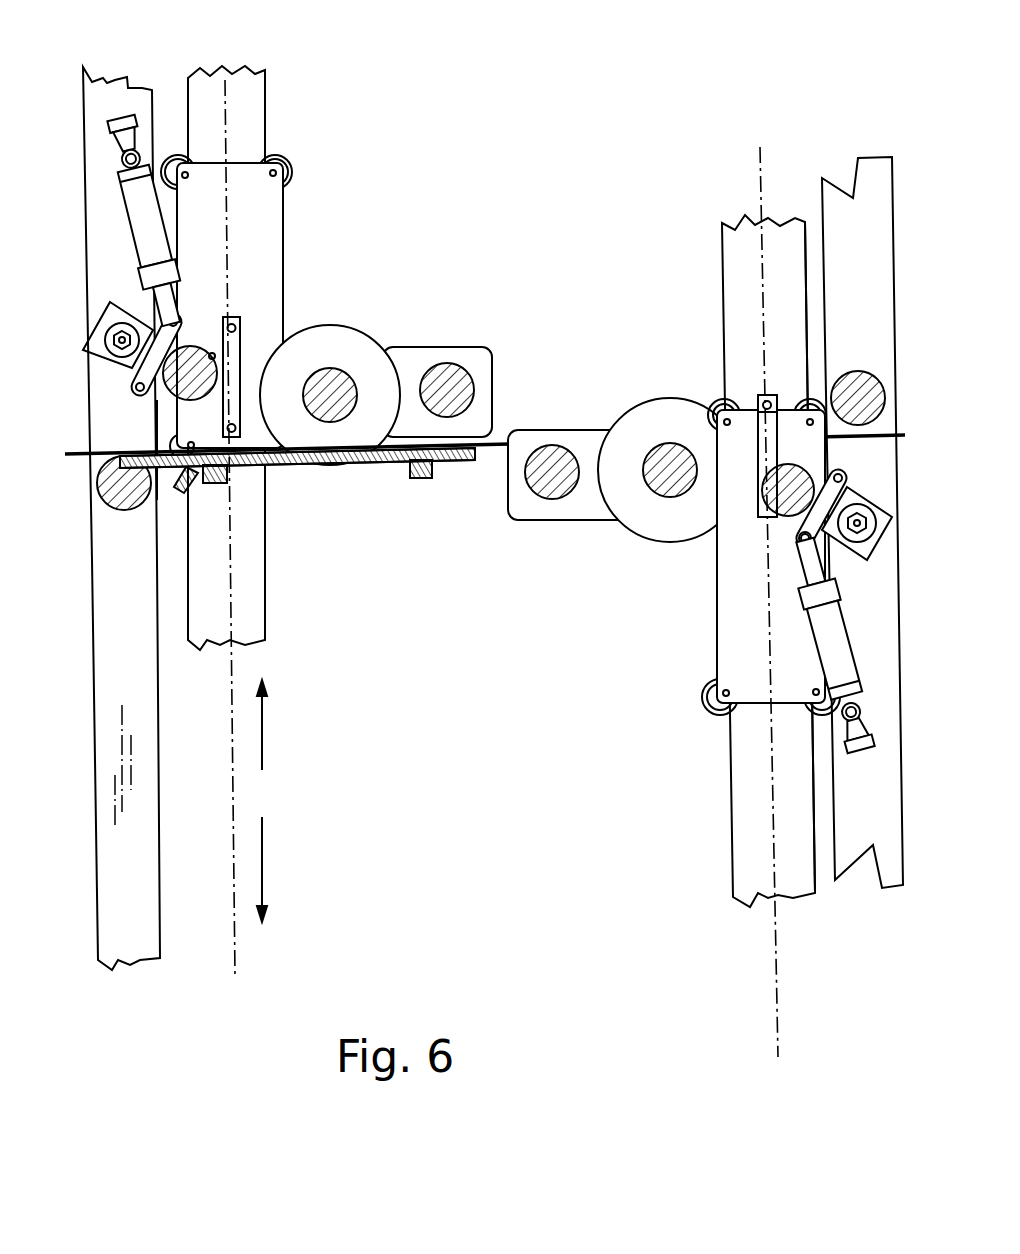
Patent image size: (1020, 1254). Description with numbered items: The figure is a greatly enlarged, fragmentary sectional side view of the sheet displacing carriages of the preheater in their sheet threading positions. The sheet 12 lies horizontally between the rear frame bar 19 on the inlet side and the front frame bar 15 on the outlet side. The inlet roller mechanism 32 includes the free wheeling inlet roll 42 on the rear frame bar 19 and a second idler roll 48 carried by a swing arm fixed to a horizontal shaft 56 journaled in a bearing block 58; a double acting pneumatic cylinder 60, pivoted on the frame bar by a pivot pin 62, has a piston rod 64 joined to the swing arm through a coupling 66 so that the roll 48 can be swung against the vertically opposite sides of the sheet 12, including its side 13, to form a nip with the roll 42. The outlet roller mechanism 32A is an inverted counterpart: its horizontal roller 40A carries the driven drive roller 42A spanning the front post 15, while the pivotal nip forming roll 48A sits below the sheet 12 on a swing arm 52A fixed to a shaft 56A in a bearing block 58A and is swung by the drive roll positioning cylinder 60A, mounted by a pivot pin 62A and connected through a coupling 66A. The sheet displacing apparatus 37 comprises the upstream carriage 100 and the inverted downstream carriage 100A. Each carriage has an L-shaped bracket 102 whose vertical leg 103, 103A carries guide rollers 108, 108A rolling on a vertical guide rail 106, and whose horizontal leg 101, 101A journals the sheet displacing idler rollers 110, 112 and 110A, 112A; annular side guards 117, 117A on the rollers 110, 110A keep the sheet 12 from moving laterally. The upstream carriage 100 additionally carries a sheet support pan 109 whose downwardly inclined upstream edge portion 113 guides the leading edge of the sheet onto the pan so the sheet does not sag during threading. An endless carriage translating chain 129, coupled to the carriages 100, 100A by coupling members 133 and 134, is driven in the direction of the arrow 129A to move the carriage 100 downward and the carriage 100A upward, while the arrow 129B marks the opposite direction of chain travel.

The sheet 12 is at (498, 463).
The side of sheet 13 is at (147, 452).
The front frame bar 15 is at (875, 200).
The rear frame bar 19 is at (92, 83).
The inlet roller mechanism 32 is at (322, 334).
The outlet roller mechanism 32A is at (721, 602).
The sheet displacing apparatus 37 is at (625, 370).
The downstream horizontal roller 40A is at (812, 262).
The sheet receiving inlet roll 42 is at (123, 493).
The drive roller 42A is at (853, 390).
The second idler roll 48 is at (241, 343).
The downstream nip forming roll 48A is at (706, 435).
The swing arm 52A is at (848, 490).
The horizontal shaft 56 is at (162, 323).
The horizontal shaft 56A is at (808, 590).
The bearing block 58 is at (178, 318).
The bearing block 58A is at (830, 558).
The double acting pneumatically operated cylinder 60 is at (154, 181).
The drive roll positioning cylinder 60A is at (817, 684).
The pivot pin 62 is at (128, 163).
The pivot pin 62A is at (857, 750).
The piston rod 64 is at (160, 300).
The coupling 66 is at (214, 355).
The coupling 66A is at (797, 543).
The upstream carriage 100 is at (277, 240).
The downstream carriage 100A is at (743, 602).
The horizontal leg 101 is at (483, 386).
The horizontal leg 101A is at (581, 536).
The L-shaped bracket 102 is at (421, 412).
The vertical leg 103 is at (283, 218).
The vertical leg 103A is at (720, 700).
The vertical guide rail 106 is at (255, 93).
The guide roller 108 is at (290, 165).
The guide roller 108A is at (718, 712).
The sheet support pan 109 is at (455, 462).
The sheet displacing idler roller 110 is at (328, 392).
The sheet displacing idler roller 110A is at (663, 472).
The sheet displacing idler roller 112 is at (456, 394).
The sheet displacing idler roller 112A is at (562, 477).
The upstream edge portion 113 is at (183, 483).
The side guard 117 is at (411, 422).
The side guard 117A is at (663, 430).
The endless chain 129 is at (233, 780).
The arrow 129A is at (262, 740).
The downward direction 129B is at (262, 848).
The coupling member 133 is at (237, 420).
The coupling member 134 is at (760, 410).